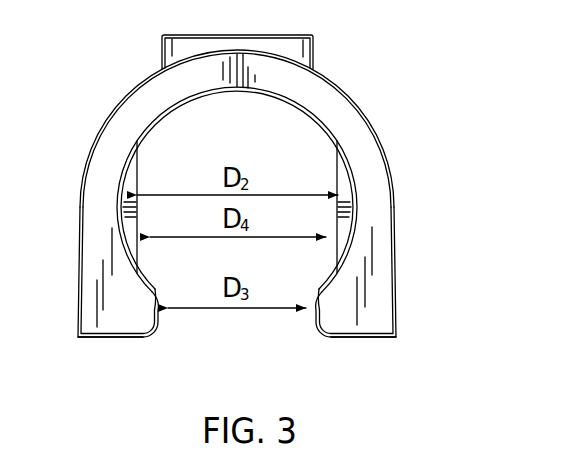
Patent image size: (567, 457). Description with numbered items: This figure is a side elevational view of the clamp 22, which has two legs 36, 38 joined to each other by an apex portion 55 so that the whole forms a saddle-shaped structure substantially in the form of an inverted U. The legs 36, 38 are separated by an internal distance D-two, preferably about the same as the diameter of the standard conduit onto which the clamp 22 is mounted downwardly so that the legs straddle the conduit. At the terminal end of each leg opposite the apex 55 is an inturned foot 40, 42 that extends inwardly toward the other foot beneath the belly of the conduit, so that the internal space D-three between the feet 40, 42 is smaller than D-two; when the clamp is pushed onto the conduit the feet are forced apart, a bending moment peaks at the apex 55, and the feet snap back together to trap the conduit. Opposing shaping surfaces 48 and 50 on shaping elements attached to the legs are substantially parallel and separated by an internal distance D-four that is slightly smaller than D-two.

The clamp 22 is at (372, 124).
The apex portion 55 is at (148, 93).
The leg 38 is at (80, 228).
The leg 36 is at (392, 239).
The inturned foot 42 is at (113, 328).
The inturned foot 40 is at (362, 328).
The shaping surface 50 is at (139, 165).
The shaping surface 48 is at (335, 165).